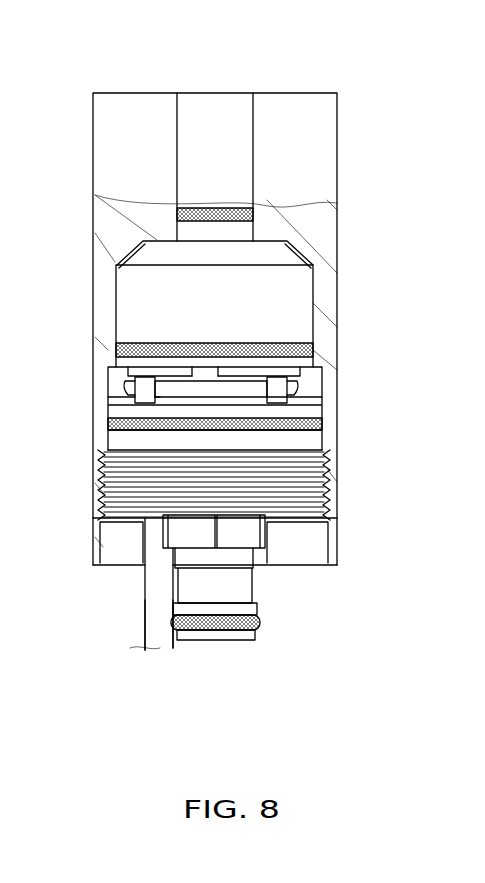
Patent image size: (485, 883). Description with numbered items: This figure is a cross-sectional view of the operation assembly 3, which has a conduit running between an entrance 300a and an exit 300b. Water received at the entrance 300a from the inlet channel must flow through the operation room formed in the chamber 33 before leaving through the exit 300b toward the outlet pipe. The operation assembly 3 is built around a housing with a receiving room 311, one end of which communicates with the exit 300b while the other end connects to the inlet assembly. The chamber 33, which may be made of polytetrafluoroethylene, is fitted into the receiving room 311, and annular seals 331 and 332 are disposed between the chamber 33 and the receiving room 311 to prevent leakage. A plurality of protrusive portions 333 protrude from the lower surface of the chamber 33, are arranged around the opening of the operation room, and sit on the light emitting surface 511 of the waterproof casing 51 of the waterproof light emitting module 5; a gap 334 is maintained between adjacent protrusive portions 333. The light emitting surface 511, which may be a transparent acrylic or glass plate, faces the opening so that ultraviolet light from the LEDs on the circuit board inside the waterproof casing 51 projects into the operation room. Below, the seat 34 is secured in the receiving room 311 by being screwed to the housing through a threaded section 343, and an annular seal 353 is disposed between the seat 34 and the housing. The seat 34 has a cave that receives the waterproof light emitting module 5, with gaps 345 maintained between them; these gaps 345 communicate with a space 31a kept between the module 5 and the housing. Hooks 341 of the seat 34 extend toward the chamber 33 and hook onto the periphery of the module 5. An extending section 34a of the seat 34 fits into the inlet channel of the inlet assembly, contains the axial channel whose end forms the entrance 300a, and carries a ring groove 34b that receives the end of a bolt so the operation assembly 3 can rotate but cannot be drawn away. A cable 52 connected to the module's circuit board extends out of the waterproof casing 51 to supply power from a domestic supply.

The operation assembly 3 is at (112, 73).
The exit 300b is at (230, 201).
The annular seal 332 is at (252, 214).
The receiving room 311 is at (130, 252).
The chamber 33 is at (307, 300).
The annular seal 331 is at (313, 352).
The gap 334 is at (204, 374).
The protrusive portions 333 is at (128, 370).
The hooks 341 is at (142, 378).
The space 31a is at (310, 391).
The light emitting surface 511 is at (170, 380).
The gaps 345 is at (183, 405).
The waterproof light emitting module 5 is at (210, 357).
The waterproof casing 51 is at (211, 357).
The seat 34 is at (214, 569).
The threaded section 343 is at (325, 478).
The extending section 34a is at (247, 540).
The ring groove 34b is at (172, 585).
The cable 52 is at (152, 618).
The entrance 300a is at (195, 636).
The annular seal 353 is at (212, 622).